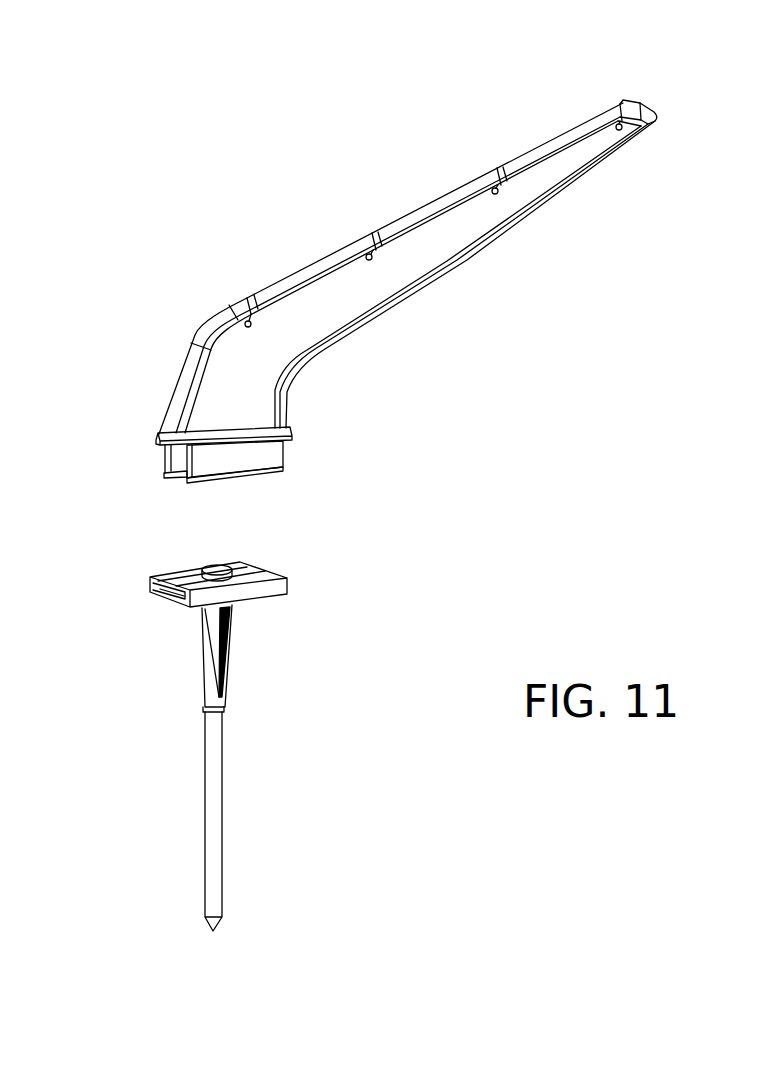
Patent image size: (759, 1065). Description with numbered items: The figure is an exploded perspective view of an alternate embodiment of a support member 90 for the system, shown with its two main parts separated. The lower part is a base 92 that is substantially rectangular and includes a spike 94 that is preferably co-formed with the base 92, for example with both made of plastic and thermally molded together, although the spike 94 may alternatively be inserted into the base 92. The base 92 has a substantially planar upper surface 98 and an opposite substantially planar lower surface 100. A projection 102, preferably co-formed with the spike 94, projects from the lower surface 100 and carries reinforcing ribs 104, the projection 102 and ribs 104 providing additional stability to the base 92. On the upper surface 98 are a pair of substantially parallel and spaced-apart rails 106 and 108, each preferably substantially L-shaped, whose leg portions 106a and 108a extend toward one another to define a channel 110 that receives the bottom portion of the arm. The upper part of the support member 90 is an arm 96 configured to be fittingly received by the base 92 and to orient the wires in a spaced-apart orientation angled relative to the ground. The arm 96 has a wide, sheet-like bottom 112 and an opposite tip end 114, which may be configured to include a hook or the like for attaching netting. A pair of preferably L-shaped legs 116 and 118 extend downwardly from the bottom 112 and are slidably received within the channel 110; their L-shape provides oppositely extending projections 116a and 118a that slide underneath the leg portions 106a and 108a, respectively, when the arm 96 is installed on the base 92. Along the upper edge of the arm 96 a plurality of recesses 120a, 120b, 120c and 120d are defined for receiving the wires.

The support member 90 is at (438, 589).
The base 92 is at (96, 583).
The spike 94 is at (217, 772).
The arm 96 is at (453, 311).
The upper surface 98 is at (250, 570).
The lower surface 100 is at (272, 615).
The projection 102 is at (207, 677).
The reinforcing ribs 104 is at (200, 628).
The rail 106 is at (216, 563).
The leg portion 106a is at (145, 583).
The rail 108 is at (278, 578).
The leg portion 108a is at (174, 607).
The channel 110 is at (170, 594).
The bottom 112 is at (284, 424).
The tip end 114 is at (669, 119).
The leg 116 is at (163, 458).
The projection 116a is at (167, 476).
The leg 118 is at (273, 455).
The projection 118a is at (207, 487).
The recess 120a is at (249, 296).
The recess 120b is at (370, 233).
The recess 120c is at (497, 167).
The recess 120d is at (623, 101).